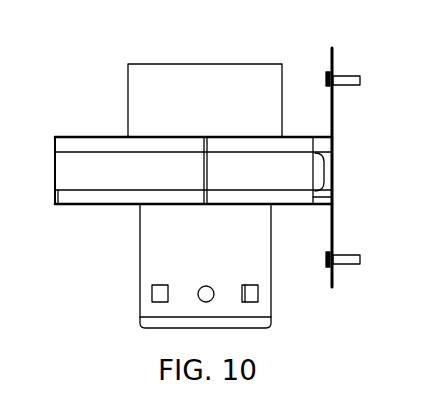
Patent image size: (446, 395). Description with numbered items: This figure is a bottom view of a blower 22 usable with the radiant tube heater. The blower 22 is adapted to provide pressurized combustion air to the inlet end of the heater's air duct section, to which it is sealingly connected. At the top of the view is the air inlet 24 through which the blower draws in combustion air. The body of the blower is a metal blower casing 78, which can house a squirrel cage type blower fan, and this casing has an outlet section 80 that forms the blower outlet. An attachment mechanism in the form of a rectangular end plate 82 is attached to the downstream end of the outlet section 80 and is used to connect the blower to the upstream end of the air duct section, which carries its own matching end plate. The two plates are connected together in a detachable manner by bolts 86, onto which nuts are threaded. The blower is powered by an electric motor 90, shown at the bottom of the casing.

The blower 22 is at (223, 57).
The air inlet 24 is at (157, 63).
The blower casing 78 is at (88, 185).
The outlet section 80 is at (322, 134).
The end plate 82 is at (334, 224).
The bolts 86 is at (347, 82).
The electric motor 90 is at (163, 248).